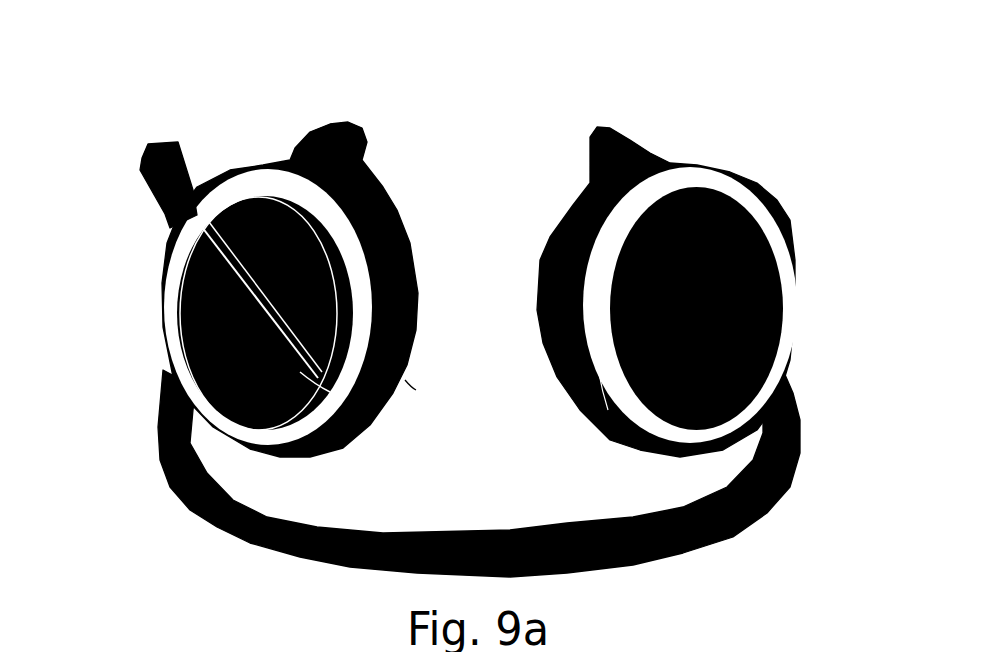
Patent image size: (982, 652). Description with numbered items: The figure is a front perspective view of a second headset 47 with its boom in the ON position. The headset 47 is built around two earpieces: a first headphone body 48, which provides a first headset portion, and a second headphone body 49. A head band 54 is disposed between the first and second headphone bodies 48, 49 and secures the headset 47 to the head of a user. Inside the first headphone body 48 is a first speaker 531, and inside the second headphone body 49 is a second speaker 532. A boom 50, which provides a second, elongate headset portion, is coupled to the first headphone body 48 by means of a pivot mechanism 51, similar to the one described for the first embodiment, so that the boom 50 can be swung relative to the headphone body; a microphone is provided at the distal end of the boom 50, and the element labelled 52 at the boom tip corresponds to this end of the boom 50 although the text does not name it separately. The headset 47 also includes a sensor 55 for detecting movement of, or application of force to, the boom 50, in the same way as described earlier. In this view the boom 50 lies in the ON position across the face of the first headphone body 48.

The second headset 47 is at (437, 84).
The first headphone body 48 is at (278, 289).
The second headphone body 49 is at (694, 292).
The boom 50 is at (186, 238).
The pivot mechanism 51 is at (335, 400).
The microphone 52 is at (183, 152).
The first speaker 531 is at (412, 307).
The second speaker 532 is at (587, 173).
The head band 54 is at (690, 552).
The sensor 55 is at (410, 383).